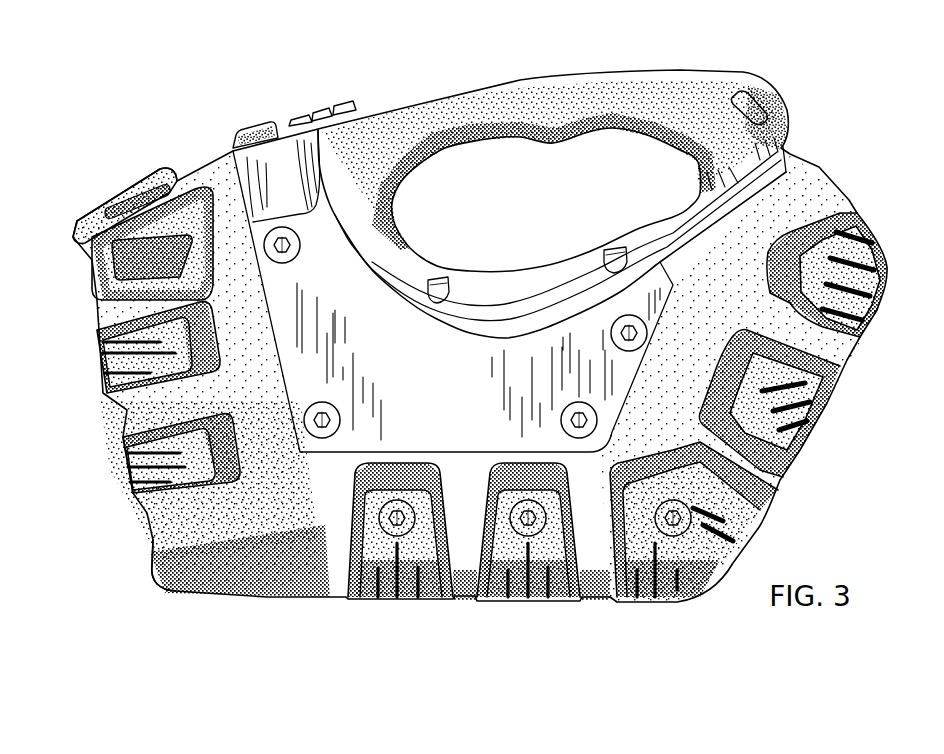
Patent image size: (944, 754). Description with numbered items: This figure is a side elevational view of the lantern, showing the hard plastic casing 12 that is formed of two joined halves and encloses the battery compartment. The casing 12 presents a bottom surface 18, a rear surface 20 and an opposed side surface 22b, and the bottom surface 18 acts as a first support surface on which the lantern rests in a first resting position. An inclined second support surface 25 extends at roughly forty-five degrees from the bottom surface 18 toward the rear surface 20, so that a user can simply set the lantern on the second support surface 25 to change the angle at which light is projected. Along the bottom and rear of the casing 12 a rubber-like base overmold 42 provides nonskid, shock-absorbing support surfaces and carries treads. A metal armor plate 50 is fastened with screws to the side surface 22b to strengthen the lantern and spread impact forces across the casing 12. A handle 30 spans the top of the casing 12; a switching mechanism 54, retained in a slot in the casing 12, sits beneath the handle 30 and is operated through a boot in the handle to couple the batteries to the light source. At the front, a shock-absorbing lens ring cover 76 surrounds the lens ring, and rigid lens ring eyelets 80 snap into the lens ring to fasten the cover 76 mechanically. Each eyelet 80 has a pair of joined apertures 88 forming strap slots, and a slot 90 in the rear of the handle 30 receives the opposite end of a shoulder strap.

The casing 12 is at (752, 173).
The bottom surface 18 is at (535, 600).
The rear surface 20 is at (862, 192).
The side surface 22b is at (507, 292).
The inclined second support surface 25 is at (810, 416).
The handle 30 is at (475, 92).
The base overmold 42 is at (850, 357).
The armor plate 50 is at (315, 253).
The switching mechanism 54 is at (287, 123).
The lens ring cover 76 is at (153, 537).
The lens ring eyelet 80 is at (100, 257).
The joined apertures 88 is at (110, 220).
The slot 90 is at (749, 93).